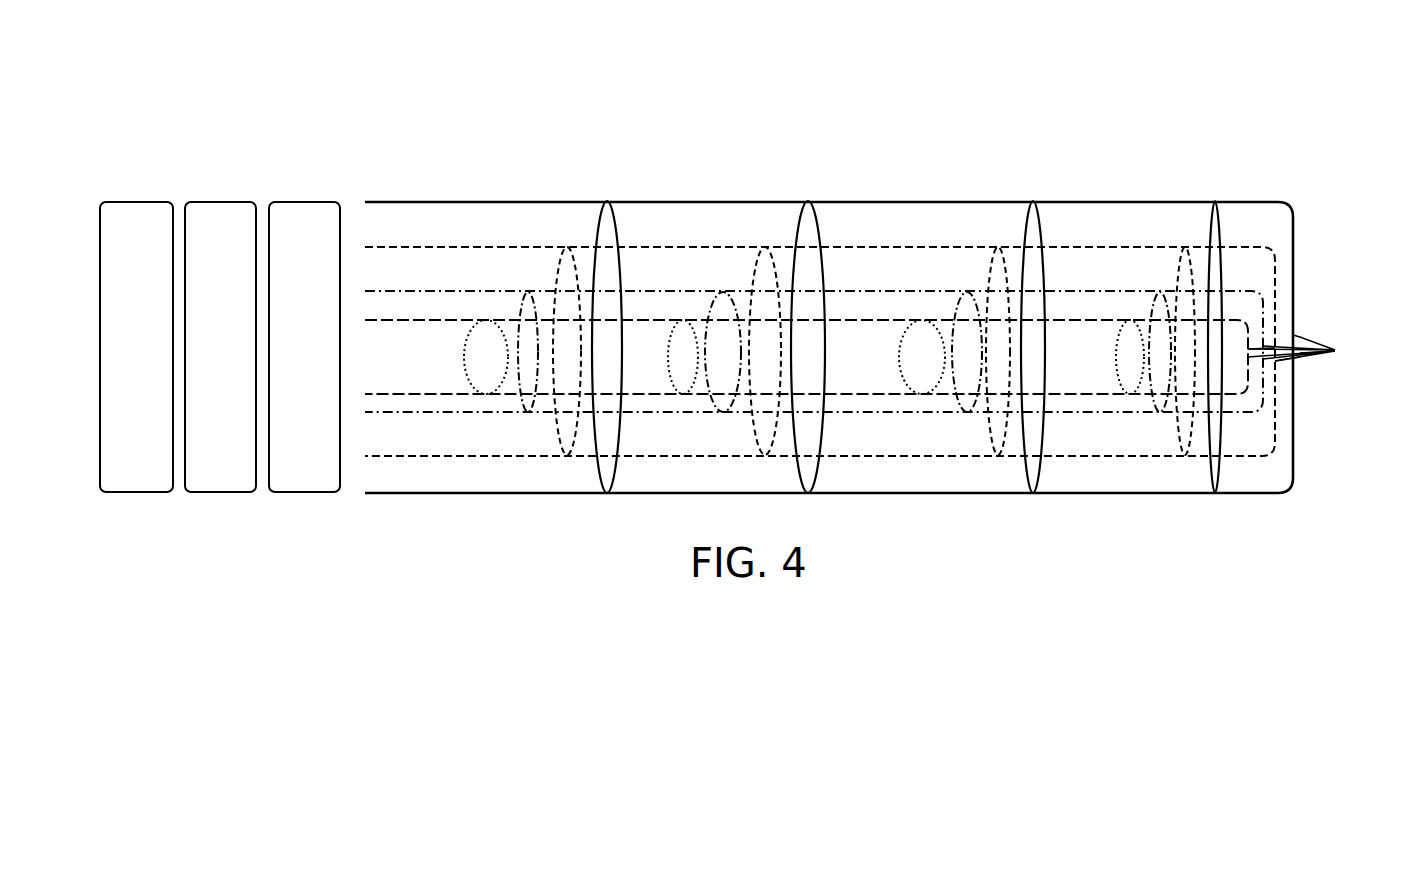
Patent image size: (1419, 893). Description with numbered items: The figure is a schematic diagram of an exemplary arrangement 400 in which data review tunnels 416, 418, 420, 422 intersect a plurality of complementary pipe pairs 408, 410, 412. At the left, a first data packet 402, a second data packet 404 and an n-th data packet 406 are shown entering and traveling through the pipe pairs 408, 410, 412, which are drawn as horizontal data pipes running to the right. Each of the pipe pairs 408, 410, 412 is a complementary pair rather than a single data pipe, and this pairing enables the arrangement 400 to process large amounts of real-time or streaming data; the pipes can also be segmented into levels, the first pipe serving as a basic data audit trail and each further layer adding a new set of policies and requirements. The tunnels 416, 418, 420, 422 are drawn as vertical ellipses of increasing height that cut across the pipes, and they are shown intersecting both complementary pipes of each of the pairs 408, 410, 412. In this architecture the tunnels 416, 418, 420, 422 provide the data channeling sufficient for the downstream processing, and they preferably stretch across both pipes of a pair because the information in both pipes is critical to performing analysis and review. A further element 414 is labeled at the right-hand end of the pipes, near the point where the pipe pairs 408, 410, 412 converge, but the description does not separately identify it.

The arrangement 400 is at (195, 70).
The data packet 402 is at (120, 202).
The data packet 404 is at (207, 202).
The data packet 406 is at (290, 202).
The complementary pipe pair 408 is at (1335, 350).
The complementary pipe pair 410 is at (1316, 355).
The complementary pipe pair 412 is at (1296, 357).
The light path 414 is at (1272, 352).
The data review tunnel 416 is at (470, 394).
The data review tunnel 418 is at (527, 412).
The data review tunnel 420 is at (567, 456).
The data review tunnel 422 is at (607, 493).